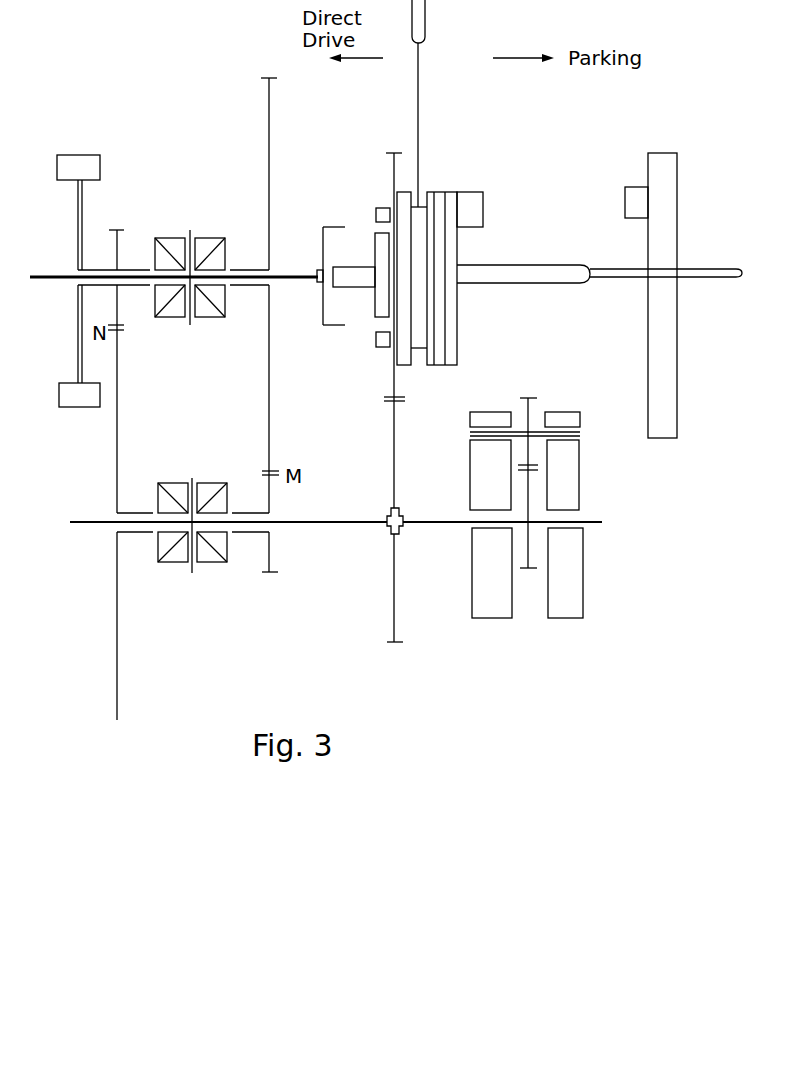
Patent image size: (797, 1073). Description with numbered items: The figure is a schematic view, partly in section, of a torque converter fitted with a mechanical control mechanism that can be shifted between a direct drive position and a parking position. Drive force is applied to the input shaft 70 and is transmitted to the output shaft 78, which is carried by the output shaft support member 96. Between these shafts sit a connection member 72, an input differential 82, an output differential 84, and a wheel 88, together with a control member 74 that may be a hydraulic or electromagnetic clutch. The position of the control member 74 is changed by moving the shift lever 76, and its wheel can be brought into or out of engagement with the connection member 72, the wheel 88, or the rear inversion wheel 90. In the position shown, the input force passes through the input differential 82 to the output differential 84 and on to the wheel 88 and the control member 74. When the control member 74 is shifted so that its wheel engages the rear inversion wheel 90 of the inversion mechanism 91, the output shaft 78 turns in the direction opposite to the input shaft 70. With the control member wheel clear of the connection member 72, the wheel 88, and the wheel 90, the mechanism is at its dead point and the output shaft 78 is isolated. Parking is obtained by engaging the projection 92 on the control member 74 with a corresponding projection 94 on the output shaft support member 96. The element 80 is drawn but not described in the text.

The input shaft 70 is at (53, 280).
The connection member 72 is at (323, 228).
The control member 74 is at (437, 200).
The shift lever 76 is at (420, 56).
The output shaft 78 is at (712, 280).
The flywheel/brake 80 is at (83, 211).
The input differential 82 is at (205, 224).
The output differential 84 is at (215, 453).
The wheel 88 is at (393, 572).
The rear inversion wheel 90 is at (527, 398).
The inversion mechanism 91 is at (519, 636).
The projection 92 is at (483, 220).
The projection 94 is at (630, 216).
The output shaft support member 96 is at (665, 181).